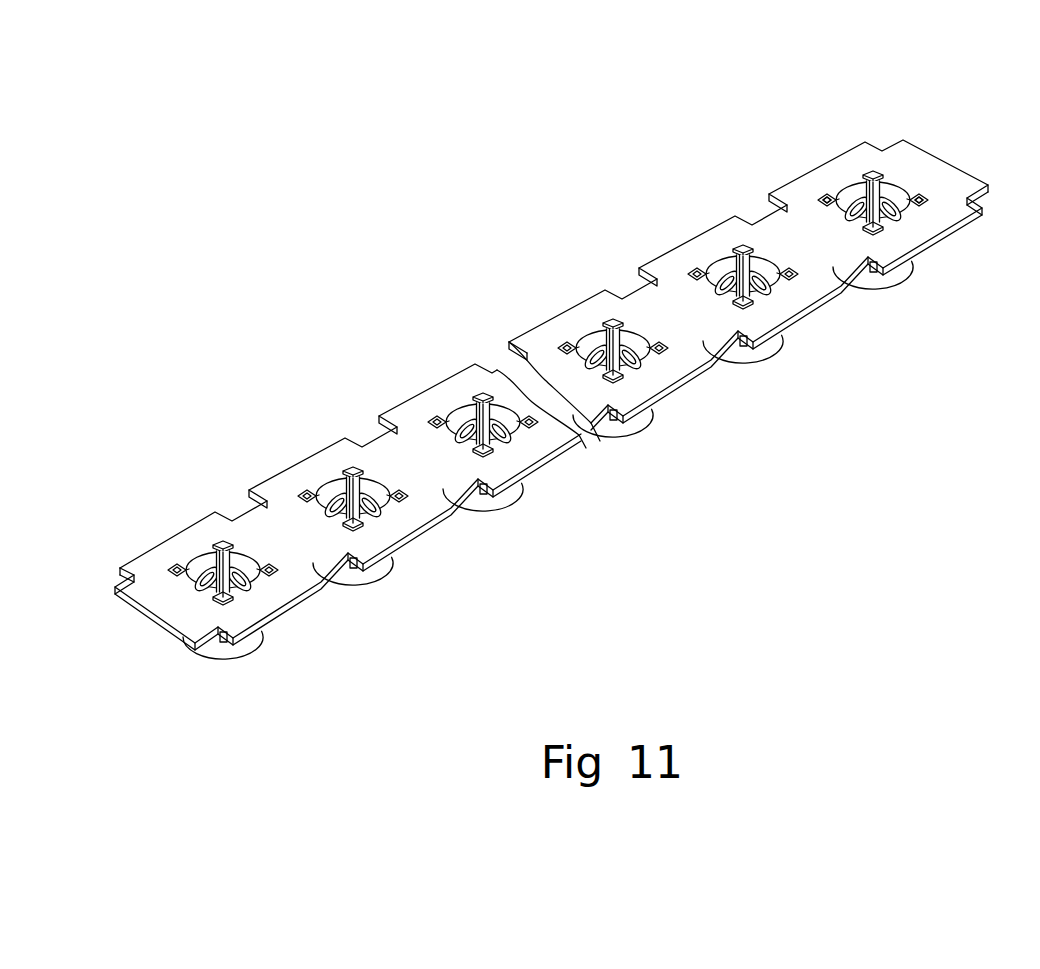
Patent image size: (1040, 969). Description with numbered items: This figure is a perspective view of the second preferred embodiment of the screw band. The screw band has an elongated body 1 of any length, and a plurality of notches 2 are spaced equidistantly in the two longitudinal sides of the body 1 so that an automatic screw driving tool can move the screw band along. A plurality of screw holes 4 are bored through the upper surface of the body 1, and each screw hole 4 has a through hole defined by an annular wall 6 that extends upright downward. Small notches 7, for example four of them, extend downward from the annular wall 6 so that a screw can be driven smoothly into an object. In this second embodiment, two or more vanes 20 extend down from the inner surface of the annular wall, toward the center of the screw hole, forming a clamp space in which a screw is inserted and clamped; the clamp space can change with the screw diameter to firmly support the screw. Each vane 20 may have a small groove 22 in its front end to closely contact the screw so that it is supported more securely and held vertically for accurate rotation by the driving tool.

The body 1 is at (977, 170).
The notches 2 is at (230, 513).
The screw holes 4 is at (908, 172).
The annular wall 6 is at (377, 571).
The small notches 7 is at (170, 570).
The vanes 20 is at (829, 197).
The small groove 22 is at (207, 590).